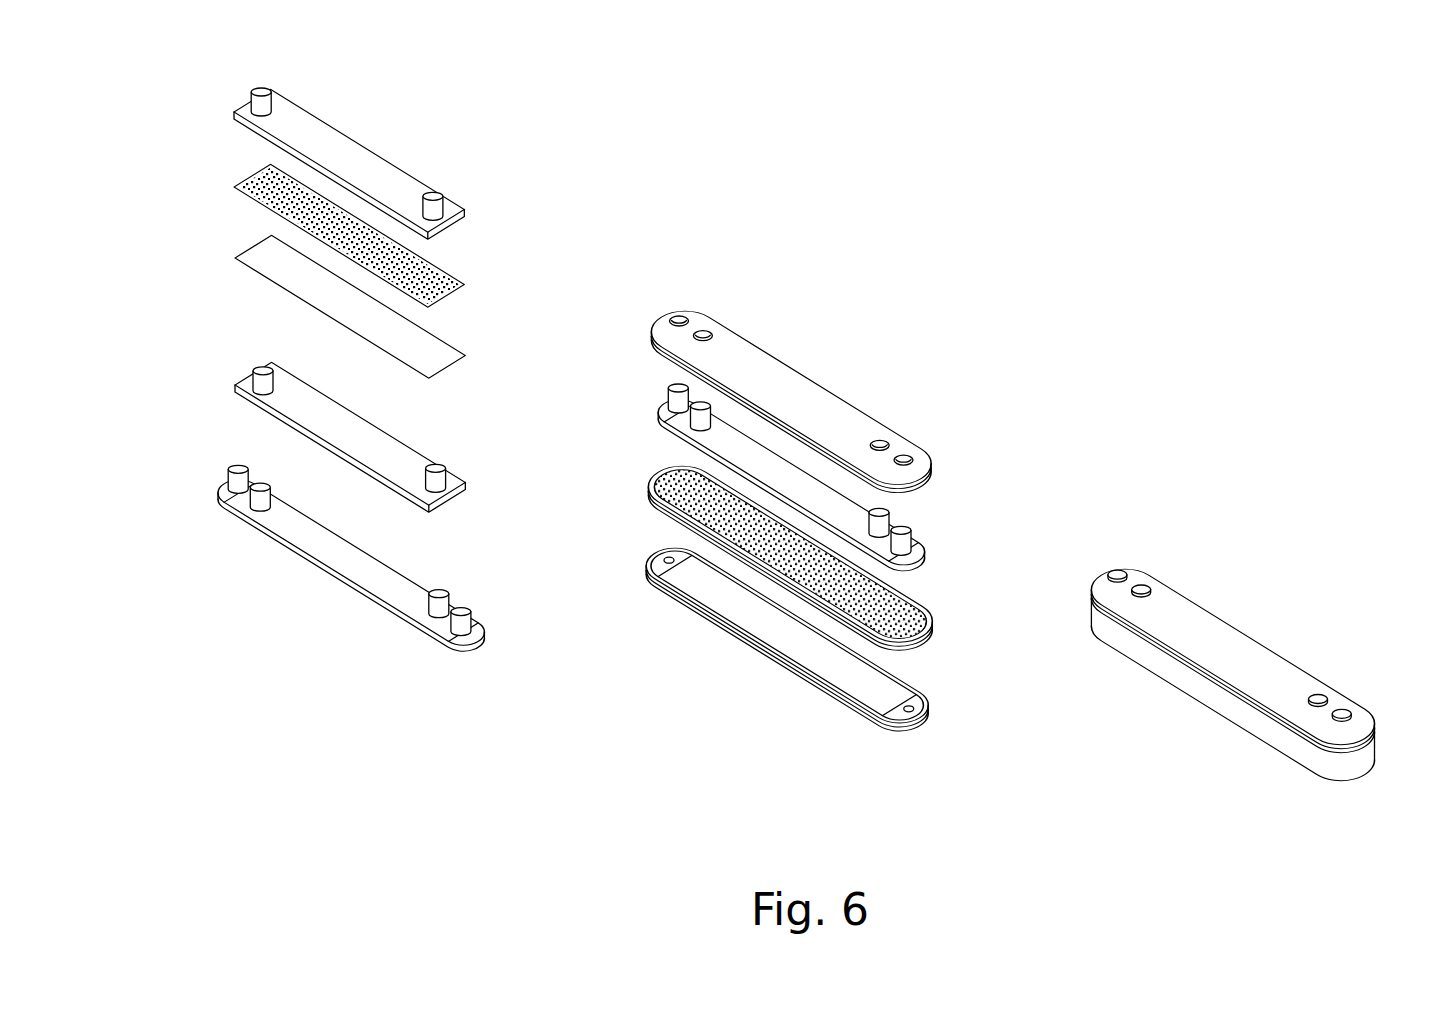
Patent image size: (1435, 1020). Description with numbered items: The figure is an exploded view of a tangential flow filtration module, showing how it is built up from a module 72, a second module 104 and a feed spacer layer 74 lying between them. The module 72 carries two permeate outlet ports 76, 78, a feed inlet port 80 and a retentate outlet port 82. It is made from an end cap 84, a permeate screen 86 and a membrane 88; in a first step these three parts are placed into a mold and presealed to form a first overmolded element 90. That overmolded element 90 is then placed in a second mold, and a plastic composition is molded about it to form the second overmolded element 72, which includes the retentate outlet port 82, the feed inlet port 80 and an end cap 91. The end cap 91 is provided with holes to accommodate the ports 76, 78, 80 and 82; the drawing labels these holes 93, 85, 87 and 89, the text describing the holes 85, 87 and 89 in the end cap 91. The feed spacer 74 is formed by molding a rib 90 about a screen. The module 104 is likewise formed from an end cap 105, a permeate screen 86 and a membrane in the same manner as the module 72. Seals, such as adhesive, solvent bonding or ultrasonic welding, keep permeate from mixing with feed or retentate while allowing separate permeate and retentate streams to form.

The second overmolded element 72 is at (350, 560).
The feed spacer layer 74 is at (897, 592).
The permeate outlet port 76 is at (433, 192).
The permeate outlet port 78 is at (260, 86).
The feed inlet port 80 is at (239, 465).
The retentate outlet port 82 is at (466, 606).
The end cap 84 is at (330, 142).
The hole 85 is at (703, 330).
The permeate screen 86 is at (417, 257).
The hole 87 is at (880, 440).
The membrane 88 is at (402, 336).
The hole 89 is at (903, 455).
The first overmolded element 90 is at (320, 408).
The end cap 91 is at (790, 377).
The hole 93 is at (679, 316).
The module 104 is at (883, 662).
The end cap 105 is at (893, 688).